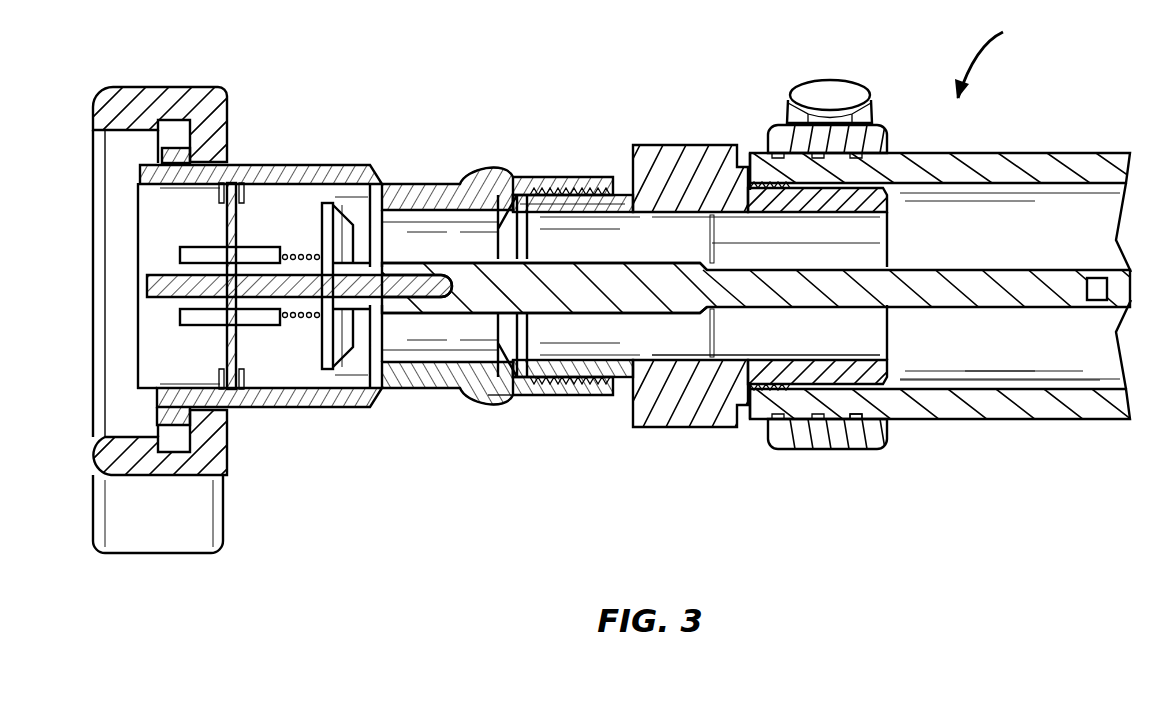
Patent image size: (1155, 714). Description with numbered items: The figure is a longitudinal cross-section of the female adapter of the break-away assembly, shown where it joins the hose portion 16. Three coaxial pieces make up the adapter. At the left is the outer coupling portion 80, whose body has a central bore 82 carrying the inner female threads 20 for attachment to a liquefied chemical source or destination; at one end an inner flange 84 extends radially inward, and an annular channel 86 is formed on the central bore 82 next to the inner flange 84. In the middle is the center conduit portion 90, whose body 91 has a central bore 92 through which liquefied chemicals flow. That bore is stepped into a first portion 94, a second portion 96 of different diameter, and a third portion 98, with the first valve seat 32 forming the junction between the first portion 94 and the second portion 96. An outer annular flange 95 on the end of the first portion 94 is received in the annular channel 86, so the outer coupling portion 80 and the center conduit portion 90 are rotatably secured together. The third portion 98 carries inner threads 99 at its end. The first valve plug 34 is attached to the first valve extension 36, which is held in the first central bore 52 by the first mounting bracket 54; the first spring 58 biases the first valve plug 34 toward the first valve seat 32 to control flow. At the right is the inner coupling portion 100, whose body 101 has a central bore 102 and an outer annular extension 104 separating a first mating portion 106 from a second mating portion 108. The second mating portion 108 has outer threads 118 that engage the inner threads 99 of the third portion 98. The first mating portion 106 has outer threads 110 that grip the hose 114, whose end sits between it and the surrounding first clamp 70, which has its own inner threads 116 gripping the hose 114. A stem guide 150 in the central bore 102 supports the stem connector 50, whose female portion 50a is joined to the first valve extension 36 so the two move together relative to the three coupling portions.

The hose portion 16 is at (993, 57).
The inner female threads 20 is at (156, 334).
The central bore 82 is at (128, 205).
The first valve extension 36 is at (147, 282).
The outer annular flange 95 is at (165, 412).
The outer coupling portion 80 is at (161, 478).
The annular channel 86 is at (180, 437).
The inner flange 84 is at (223, 455).
The first central bore 52 is at (195, 207).
The first mounting bracket 54 is at (237, 213).
The first spring 58 is at (300, 250).
The first valve plug 34 is at (333, 210).
The first valve seat 32 is at (745, 302).
The first portion 94 is at (307, 395).
The second portion 96 is at (402, 388).
The center conduit portion 90 is at (440, 393).
The central bore 92 is at (466, 393).
The body 91 is at (497, 400).
The third portion 98 is at (573, 302).
The inner threads 99 is at (540, 190).
The outer threads 118 is at (575, 190).
The second mating portion 108 is at (605, 190).
The female portion 50a is at (645, 265).
The outer annular extension 104 is at (693, 163).
The stem guide 150 is at (713, 213).
The first clamp 70 is at (783, 124).
The central bore 102 is at (657, 410).
The inner coupling portion 100 is at (741, 298).
The body 101 is at (775, 385).
The outer threads 110 is at (783, 343).
The first mating portion 106 is at (842, 439).
The inner threads 116 is at (889, 418).
The stem connector 50 is at (764, 294).
The hose 114 is at (1007, 412).